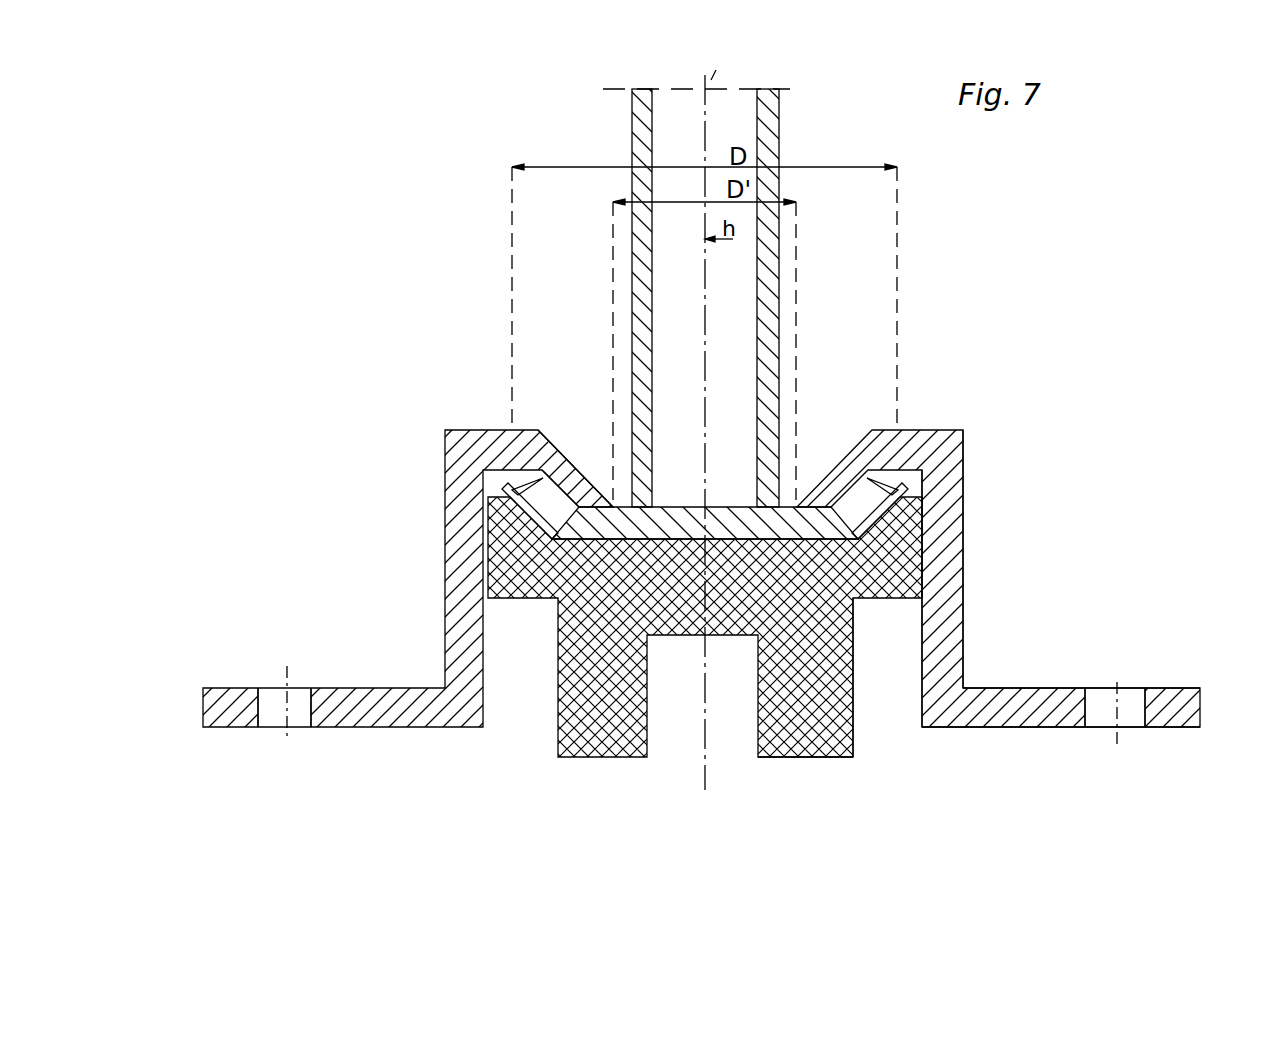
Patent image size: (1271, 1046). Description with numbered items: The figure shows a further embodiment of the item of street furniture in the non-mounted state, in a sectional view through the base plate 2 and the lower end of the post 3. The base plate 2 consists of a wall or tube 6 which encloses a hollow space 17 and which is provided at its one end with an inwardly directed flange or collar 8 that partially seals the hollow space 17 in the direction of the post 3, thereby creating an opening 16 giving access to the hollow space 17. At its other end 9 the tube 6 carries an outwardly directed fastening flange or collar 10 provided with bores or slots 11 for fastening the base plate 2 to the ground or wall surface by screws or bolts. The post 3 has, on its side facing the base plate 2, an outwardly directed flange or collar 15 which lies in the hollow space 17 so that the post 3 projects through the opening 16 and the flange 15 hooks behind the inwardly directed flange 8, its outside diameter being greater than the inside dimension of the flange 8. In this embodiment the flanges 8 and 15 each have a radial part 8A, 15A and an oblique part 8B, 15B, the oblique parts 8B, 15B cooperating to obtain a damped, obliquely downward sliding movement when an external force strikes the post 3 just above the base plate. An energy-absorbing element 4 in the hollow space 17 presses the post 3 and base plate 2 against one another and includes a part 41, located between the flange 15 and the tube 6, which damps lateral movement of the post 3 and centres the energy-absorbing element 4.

The base plate 2 is at (983, 560).
The post 3 is at (768, 132).
The energy-absorbing element 4 is at (813, 700).
The wall or tube 6 is at (948, 600).
The inwardly directed flange or collar 8 is at (998, 558).
The radial part of the inwardly directed flange 8A is at (505, 450).
The oblique part of the inwardly directed flange 8B is at (486, 443).
The other end 9 is at (990, 748).
The fastening flange or collar 10 is at (1177, 707).
The bores or slots 11 is at (1130, 708).
The outwardly directed flange or collar 15 is at (723, 523).
The radial part of the outwardly directed flange 15A is at (603, 528).
The oblique part of the outwardly directed flange 15B is at (603, 510).
The opening 16 is at (482, 358).
The hollow space 17 is at (885, 650).
The part of the energy-absorbing element 41 is at (895, 516).